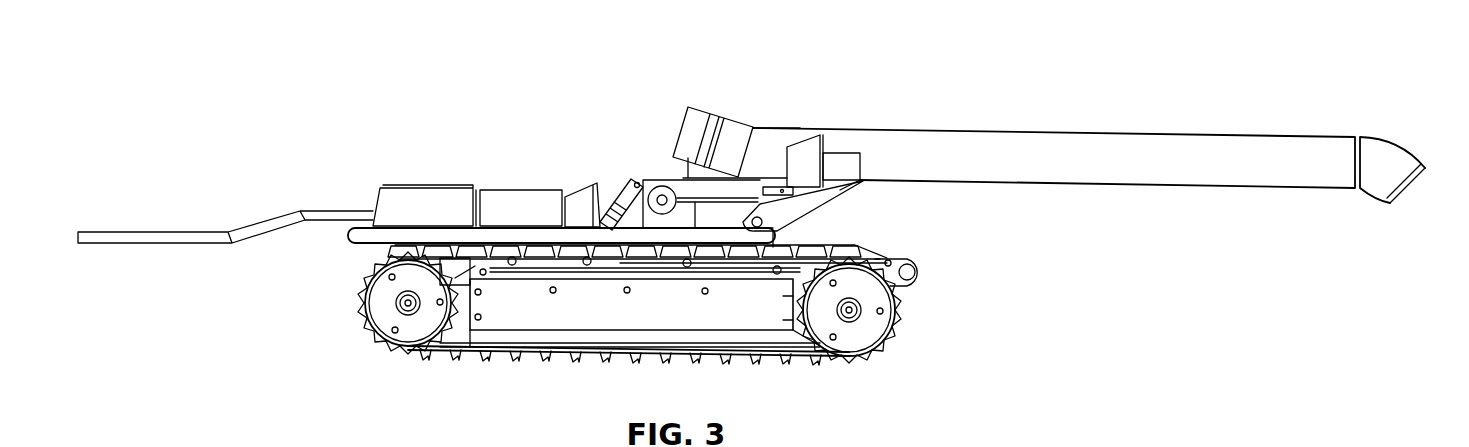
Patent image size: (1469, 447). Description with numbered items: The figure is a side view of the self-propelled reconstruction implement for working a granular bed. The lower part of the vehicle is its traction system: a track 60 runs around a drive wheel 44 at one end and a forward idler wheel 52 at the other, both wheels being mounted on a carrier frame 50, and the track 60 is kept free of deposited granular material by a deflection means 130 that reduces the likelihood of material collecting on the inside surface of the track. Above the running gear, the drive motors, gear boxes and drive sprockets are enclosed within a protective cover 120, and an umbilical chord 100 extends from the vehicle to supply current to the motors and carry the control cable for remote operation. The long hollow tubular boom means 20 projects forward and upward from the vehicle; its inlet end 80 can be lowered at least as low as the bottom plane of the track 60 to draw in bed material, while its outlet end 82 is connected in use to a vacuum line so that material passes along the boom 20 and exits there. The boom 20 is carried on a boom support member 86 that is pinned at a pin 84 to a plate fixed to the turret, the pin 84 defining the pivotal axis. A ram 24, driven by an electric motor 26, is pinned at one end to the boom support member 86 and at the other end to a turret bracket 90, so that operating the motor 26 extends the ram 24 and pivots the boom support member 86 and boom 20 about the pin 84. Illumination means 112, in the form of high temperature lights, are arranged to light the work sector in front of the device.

The boom means 20 is at (1282, 133).
The ram 24 is at (730, 128).
The electric motor 26 is at (657, 186).
The drive wheel 44 is at (412, 333).
The carrier frame 50 is at (478, 332).
The forward idler wheel 52 is at (880, 330).
The track 60 is at (618, 358).
The inlet end 80 is at (1394, 203).
The outlet end 82 is at (673, 120).
The pin 84 is at (833, 190).
The boom support member 86 is at (840, 197).
The turret bracket 90 is at (633, 183).
The umbilical chord 100 is at (185, 247).
The illumination means 112 is at (807, 150).
The protective cover 120 is at (440, 187).
The deflection means 130 is at (752, 335).